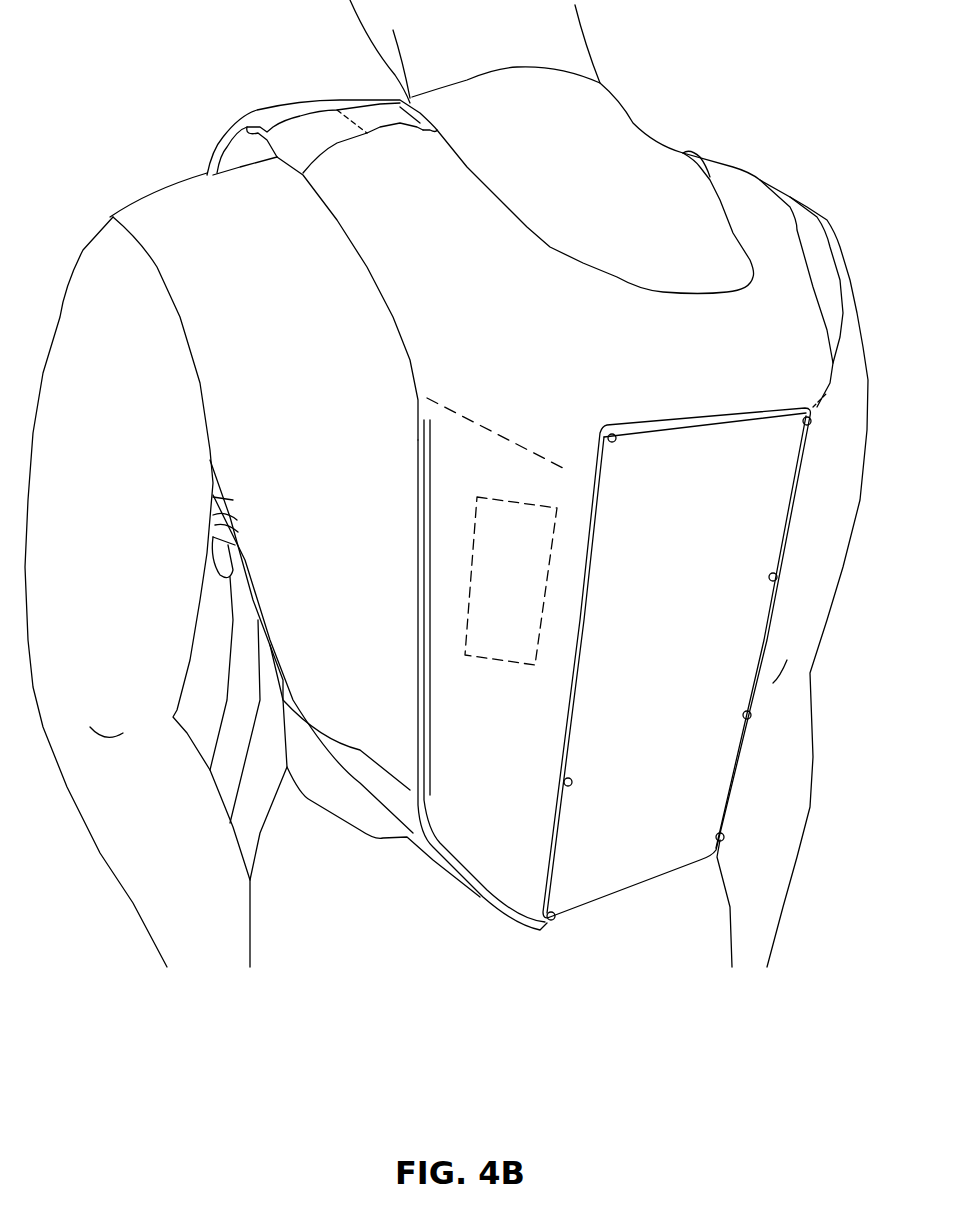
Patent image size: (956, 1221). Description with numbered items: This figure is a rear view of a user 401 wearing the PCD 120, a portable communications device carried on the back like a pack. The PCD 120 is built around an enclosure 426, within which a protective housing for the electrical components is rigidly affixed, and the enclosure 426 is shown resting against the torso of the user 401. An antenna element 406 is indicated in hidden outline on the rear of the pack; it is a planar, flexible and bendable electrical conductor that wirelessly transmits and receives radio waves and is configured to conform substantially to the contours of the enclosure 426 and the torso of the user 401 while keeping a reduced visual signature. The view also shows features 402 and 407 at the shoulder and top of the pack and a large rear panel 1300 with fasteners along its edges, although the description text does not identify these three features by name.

The user 401 is at (131, 453).
The shoulder strap 402 is at (232, 240).
The grab handle 407 is at (250, 117).
The PCD 120 is at (718, 326).
The antenna element 406 is at (525, 602).
The enclosure 426 is at (518, 853).
The rigid back panel 1300 is at (719, 637).